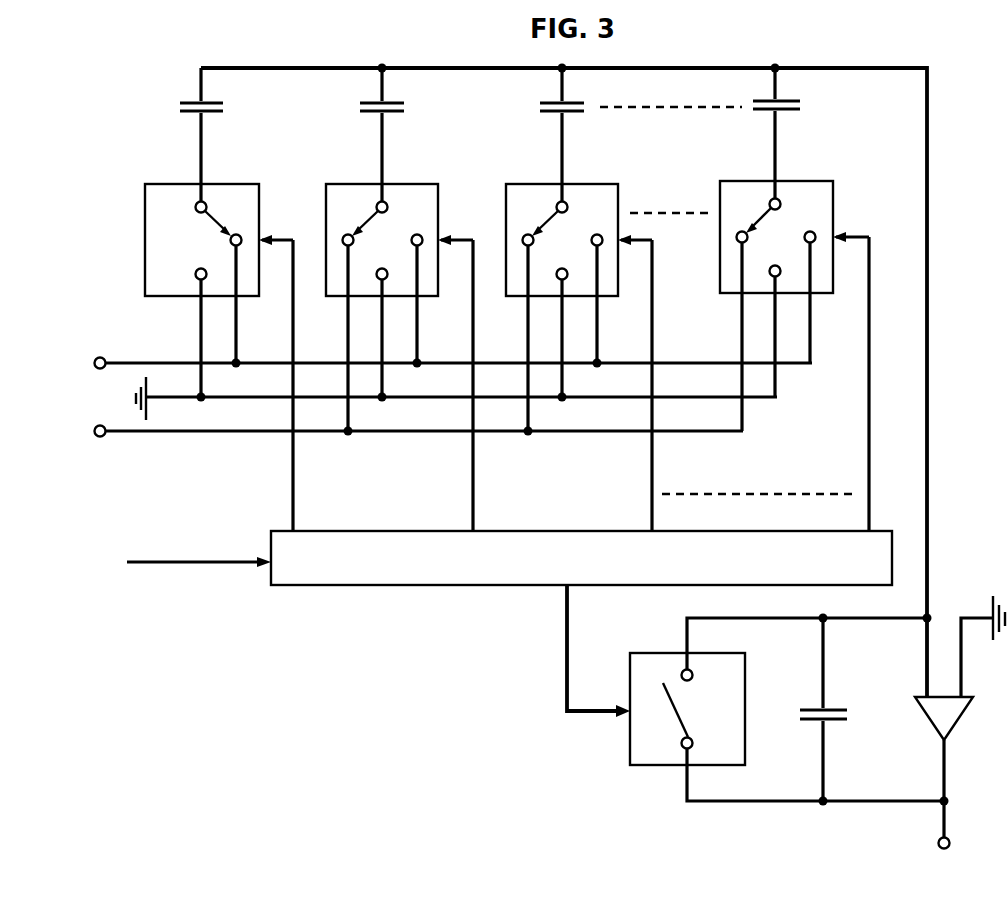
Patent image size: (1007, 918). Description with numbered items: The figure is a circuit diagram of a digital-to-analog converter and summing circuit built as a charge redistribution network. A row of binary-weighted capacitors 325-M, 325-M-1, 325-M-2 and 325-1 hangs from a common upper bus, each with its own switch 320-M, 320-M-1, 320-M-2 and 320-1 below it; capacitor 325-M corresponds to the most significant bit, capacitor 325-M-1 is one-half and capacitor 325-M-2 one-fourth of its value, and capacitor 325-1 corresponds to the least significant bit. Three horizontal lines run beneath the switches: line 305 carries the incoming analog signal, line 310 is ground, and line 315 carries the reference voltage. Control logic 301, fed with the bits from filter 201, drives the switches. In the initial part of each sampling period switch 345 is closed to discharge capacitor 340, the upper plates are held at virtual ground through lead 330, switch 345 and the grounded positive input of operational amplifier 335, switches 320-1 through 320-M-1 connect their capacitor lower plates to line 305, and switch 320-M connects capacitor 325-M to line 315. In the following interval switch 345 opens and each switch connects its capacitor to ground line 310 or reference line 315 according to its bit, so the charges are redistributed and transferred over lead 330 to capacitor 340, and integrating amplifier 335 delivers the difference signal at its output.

The capacitor 325-M is at (168, 135).
The capacitor 325-M-1 is at (338, 135).
The capacitor 325-M-2 is at (518, 135).
The capacitor 325-1 is at (806, 133).
The switch 320-M is at (145, 217).
The switch 320-M-1 is at (326, 213).
The switch 320-M-2 is at (506, 213).
The switch 320-1 is at (720, 200).
The line 305 is at (137, 432).
The line 310 is at (180, 398).
The line 315 is at (225, 365).
The control logic 301 is at (395, 586).
The filter 201 is at (154, 568).
The lead 330 is at (928, 592).
The capacitor 340 is at (803, 710).
The switch 345 is at (652, 766).
The operational amplifier 335 is at (927, 720).